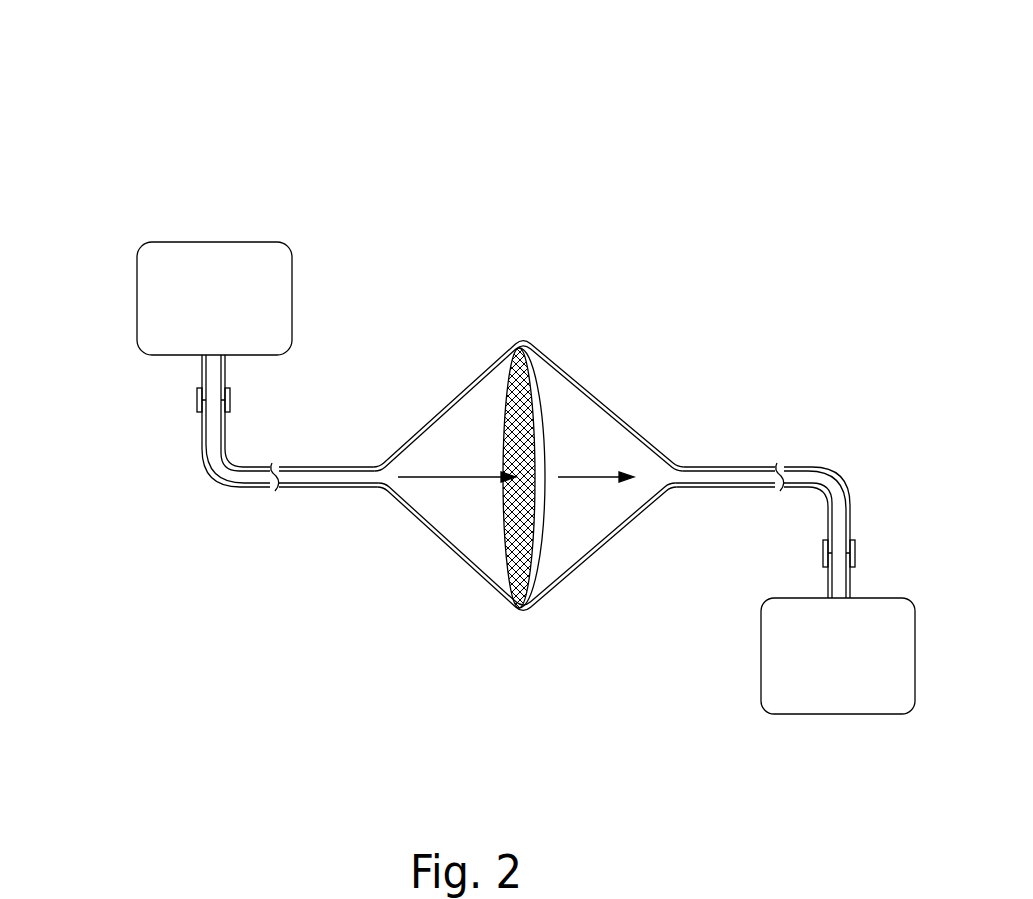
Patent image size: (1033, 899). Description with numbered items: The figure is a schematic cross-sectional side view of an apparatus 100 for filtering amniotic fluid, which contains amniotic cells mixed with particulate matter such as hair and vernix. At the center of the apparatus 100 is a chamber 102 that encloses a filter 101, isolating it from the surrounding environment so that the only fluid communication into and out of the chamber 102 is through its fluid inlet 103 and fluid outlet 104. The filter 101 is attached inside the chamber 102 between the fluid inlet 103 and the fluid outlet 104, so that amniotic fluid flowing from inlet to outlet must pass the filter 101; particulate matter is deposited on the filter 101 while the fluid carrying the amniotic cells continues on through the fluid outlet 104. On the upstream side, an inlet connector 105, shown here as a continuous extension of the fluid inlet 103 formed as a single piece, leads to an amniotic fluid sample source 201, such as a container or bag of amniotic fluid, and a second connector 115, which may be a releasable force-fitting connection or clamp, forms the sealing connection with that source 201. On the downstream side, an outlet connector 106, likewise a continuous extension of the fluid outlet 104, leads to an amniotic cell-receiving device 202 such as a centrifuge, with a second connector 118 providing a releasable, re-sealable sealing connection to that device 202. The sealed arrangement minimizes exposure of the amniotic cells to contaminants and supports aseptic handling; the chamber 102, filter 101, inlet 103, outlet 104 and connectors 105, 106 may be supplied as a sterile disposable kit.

The apparatus 100 is at (126, 52).
The filter 101 is at (532, 373).
The chamber 102 is at (520, 440).
The fluid inlet 103 is at (371, 477).
The fluid outlet 104 is at (685, 477).
The inlet connector 105 is at (228, 523).
The outlet connector 106 is at (841, 430).
The second connector 115 is at (198, 408).
The second connector 118 is at (857, 545).
The amniotic fluid sample source 201 is at (157, 262).
The amniotic cell-receiving device 202 is at (787, 689).